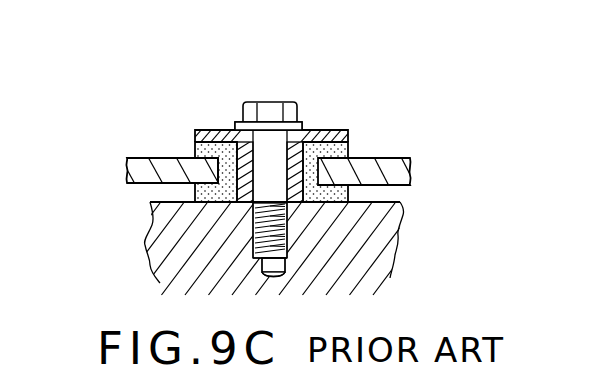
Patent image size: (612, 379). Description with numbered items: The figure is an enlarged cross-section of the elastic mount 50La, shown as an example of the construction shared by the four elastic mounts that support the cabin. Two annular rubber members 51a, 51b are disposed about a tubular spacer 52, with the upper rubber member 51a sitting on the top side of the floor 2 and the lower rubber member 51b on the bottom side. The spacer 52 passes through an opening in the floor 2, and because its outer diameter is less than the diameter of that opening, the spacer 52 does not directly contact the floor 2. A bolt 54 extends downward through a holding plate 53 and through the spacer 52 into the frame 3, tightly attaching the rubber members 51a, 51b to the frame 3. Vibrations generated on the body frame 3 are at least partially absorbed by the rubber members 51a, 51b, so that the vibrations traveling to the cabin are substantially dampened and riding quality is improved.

The floor 2 is at (402, 175).
The frame 3 is at (373, 243).
The elastic mount 50La is at (372, 128).
The annular rubber member 51a is at (195, 152).
The annular rubber member 51b is at (205, 190).
The tubular spacer 52 is at (318, 137).
The holding plate 53 is at (208, 130).
The bolt 54 is at (268, 113).